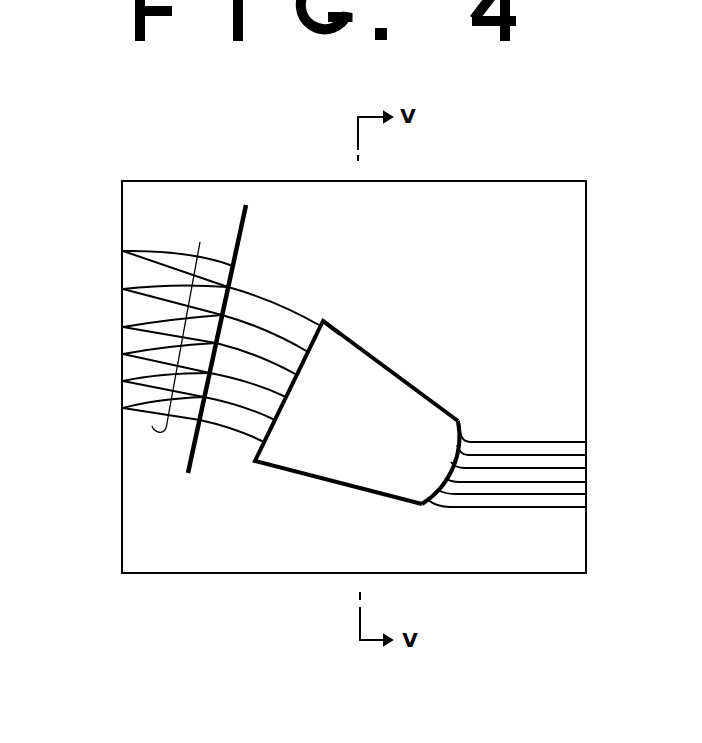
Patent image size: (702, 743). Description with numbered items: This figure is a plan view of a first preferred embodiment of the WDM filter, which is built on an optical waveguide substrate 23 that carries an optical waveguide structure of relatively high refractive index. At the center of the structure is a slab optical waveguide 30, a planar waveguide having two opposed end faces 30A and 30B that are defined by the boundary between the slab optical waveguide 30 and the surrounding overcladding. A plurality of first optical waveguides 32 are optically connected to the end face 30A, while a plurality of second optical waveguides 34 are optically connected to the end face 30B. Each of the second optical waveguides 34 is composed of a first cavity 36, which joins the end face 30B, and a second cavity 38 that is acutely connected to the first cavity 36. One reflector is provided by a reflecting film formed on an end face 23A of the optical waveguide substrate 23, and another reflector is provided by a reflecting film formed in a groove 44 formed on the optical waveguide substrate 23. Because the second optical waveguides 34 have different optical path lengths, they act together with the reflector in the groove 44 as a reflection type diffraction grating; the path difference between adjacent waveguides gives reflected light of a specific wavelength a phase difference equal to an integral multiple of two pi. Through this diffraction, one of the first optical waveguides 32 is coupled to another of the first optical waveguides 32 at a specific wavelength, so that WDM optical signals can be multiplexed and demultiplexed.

The optical waveguide substrate 23 is at (222, 568).
The end face of the optical waveguide substrate 23A is at (127, 558).
The slab optical waveguide 30 is at (392, 371).
The end face of the slab optical waveguide 30A is at (465, 428).
The end face of the slab optical waveguide 30B is at (323, 320).
The first optical waveguides 32 is at (515, 513).
The second optical waveguides 34 is at (200, 242).
The first cavity 36 is at (223, 437).
The second cavity 38 is at (128, 400).
The groove 44 is at (192, 477).